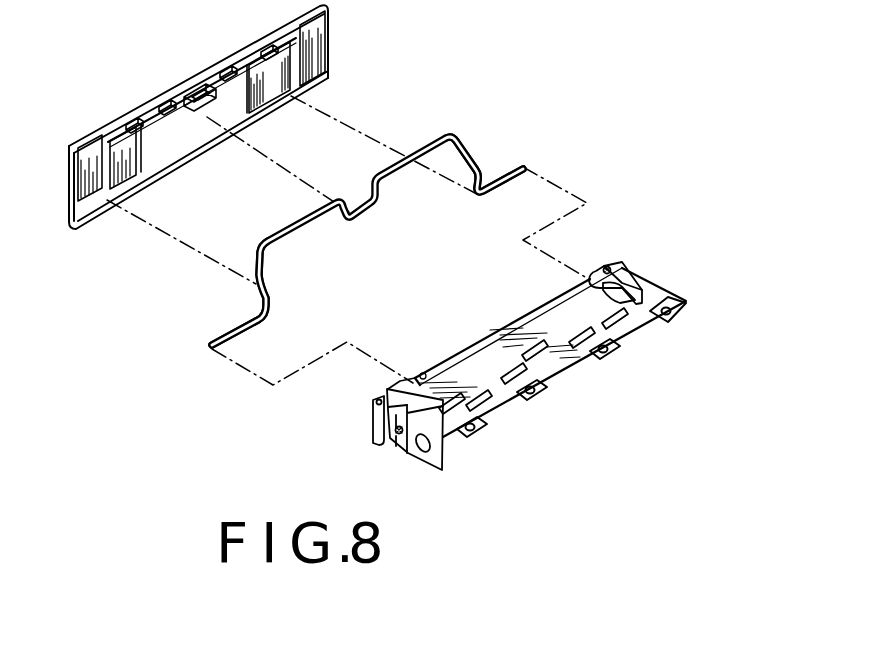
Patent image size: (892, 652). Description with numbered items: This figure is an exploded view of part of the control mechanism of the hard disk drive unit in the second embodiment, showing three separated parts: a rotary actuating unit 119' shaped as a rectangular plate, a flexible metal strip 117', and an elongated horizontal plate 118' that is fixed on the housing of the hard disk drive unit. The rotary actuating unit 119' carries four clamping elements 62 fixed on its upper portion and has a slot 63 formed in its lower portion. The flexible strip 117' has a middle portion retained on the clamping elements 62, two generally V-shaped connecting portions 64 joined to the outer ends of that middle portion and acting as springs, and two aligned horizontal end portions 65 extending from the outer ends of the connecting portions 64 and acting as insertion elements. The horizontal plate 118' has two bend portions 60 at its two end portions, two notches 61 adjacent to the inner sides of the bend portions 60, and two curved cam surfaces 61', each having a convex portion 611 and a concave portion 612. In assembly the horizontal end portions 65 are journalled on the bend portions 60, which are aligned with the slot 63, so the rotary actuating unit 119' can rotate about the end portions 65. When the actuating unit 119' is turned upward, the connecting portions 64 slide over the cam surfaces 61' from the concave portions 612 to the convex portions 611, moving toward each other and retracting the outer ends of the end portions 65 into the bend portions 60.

The rotary actuating unit 119' is at (240, 117).
The clamping elements 62 is at (252, 45).
The slot 63 is at (294, 95).
The flexible metal strip 117' is at (367, 211).
The V-shaped connecting portions 64 is at (268, 289).
The horizontal end portions 65 is at (243, 328).
The horizontal plate 118' is at (561, 331).
The bend portions 60 is at (376, 404).
The notches 61 is at (566, 398).
The curved cam surfaces 61' is at (658, 229).
The convex portion 611 is at (396, 434).
The concave portion 612 is at (410, 454).